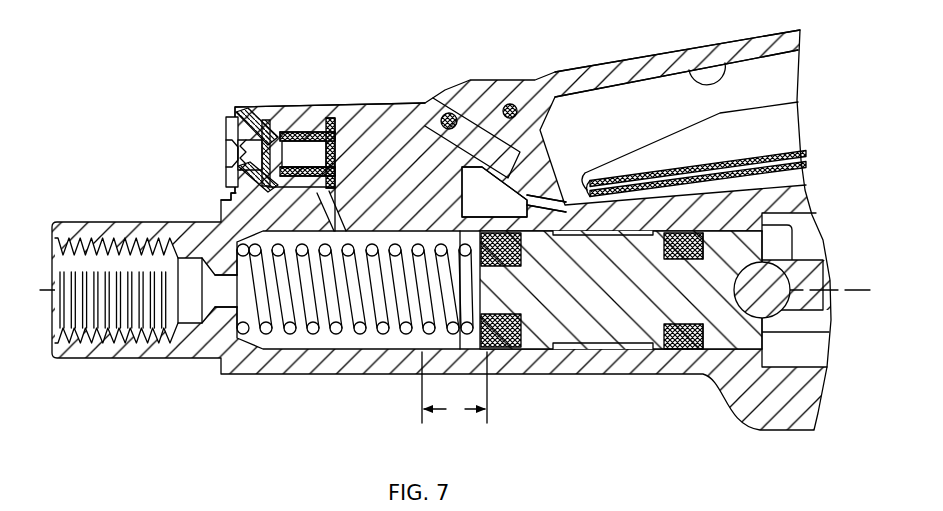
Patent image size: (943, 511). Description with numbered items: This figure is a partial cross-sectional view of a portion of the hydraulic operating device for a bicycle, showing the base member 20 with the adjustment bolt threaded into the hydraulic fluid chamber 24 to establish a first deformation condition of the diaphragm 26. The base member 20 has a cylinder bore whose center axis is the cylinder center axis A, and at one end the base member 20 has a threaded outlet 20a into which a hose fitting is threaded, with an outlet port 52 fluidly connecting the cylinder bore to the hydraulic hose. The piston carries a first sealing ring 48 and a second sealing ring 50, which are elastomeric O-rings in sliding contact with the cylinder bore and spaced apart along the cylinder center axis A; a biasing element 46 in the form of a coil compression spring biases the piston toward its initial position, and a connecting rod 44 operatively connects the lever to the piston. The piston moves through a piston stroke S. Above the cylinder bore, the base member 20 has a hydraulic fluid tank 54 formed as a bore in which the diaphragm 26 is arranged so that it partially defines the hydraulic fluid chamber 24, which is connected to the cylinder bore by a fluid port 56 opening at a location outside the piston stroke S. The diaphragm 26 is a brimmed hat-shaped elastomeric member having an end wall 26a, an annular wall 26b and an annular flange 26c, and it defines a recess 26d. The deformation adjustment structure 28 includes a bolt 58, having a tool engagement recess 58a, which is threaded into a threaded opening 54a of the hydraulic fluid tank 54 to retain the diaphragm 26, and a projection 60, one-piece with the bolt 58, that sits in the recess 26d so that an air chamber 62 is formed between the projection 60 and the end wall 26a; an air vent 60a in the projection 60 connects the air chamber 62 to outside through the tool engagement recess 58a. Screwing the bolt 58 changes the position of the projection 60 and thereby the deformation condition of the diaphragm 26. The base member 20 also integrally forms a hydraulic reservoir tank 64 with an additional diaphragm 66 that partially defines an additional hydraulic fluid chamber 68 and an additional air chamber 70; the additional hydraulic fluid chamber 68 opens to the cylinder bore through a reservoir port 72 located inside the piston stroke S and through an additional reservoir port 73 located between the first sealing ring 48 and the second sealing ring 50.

The base member 20 is at (628, 378).
The threaded outlet 20a is at (85, 340).
The hydraulic fluid chamber 24 is at (343, 118).
The diaphragm 26 is at (330, 178).
The end wall 26a is at (345, 140).
The annular wall 26b is at (308, 133).
The annular flange 26c is at (290, 132).
The recess 26d is at (320, 160).
The deformation adjustment structure 28 is at (212, 140).
The connecting rod 44 is at (800, 260).
The biasing element 46 is at (337, 334).
The first sealing ring 48 is at (512, 348).
The second sealing ring 50 is at (688, 350).
The outlet port 52 is at (226, 298).
The hydraulic fluid tank 54 is at (246, 110).
The threaded opening 54a is at (258, 122).
The fluid port 56 is at (345, 222).
The bolt 58 is at (226, 127).
The tool engagement recess 58a is at (228, 158).
The projection 60 is at (330, 200).
The air vent 60a is at (230, 192).
The air chamber 62 is at (299, 147).
The hydraulic reservoir tank 64 is at (645, 57).
The additional diaphragm 66 is at (610, 168).
The additional hydraulic fluid chamber 68 is at (720, 62).
The additional air chamber 70 is at (652, 176).
The reservoir port 72 is at (473, 218).
The additional reservoir port 73 is at (562, 205).
The cylinder center axis A is at (590, 293).
The piston stroke S is at (454, 389).